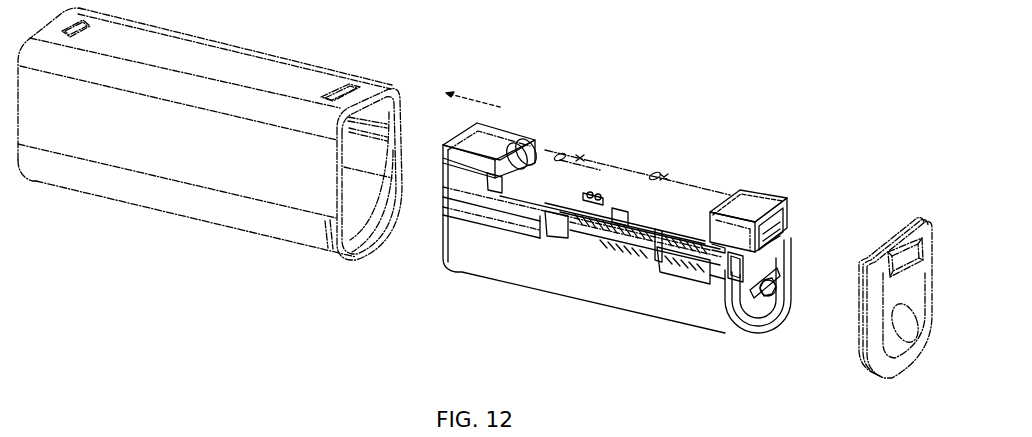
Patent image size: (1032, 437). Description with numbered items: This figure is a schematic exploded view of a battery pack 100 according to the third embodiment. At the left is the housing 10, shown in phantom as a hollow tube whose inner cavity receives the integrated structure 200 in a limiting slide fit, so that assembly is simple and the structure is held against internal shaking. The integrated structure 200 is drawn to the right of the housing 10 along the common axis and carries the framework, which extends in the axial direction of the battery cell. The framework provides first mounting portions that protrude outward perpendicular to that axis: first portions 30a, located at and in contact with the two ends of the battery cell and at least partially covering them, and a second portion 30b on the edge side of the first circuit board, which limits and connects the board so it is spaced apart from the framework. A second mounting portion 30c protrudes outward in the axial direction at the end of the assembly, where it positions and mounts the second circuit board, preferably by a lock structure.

The housing 10 is at (212, 43).
The battery pack 100 is at (402, 338).
The integrated structure 200 is at (641, 147).
The first portions 30a is at (727, 331).
The second portion 30b is at (671, 179).
The second mounting portion 30c is at (792, 266).